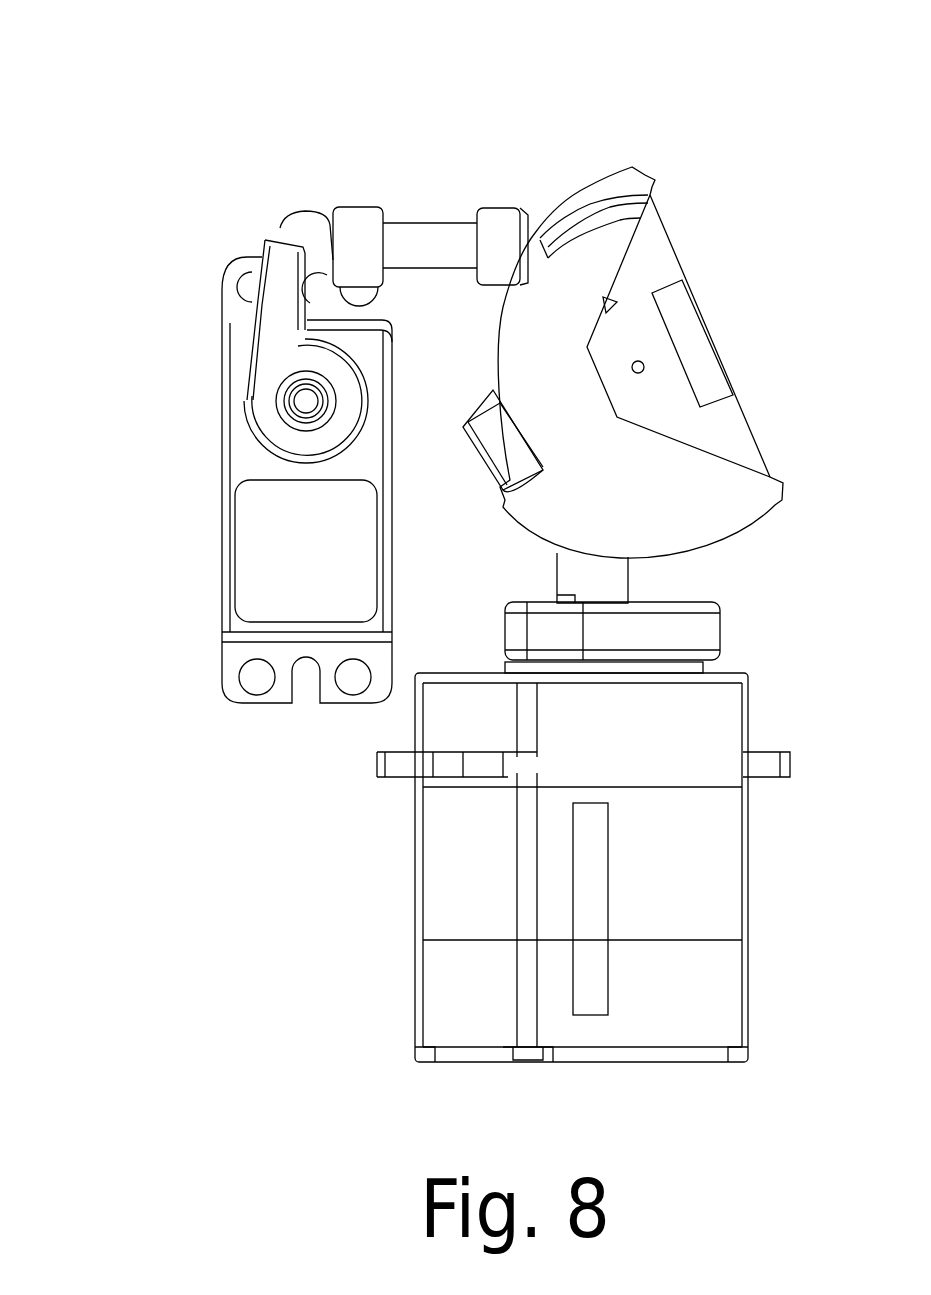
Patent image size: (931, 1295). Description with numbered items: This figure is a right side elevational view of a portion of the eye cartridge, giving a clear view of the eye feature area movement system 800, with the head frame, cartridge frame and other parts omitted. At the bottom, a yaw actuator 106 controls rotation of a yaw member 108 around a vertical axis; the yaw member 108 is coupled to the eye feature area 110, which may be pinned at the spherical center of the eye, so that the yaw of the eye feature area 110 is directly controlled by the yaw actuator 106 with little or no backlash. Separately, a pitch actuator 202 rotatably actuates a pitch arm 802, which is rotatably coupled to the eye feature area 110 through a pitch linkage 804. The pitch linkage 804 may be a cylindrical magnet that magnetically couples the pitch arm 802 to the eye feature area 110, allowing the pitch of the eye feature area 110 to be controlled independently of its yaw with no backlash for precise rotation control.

The eye feature area movement system 800 is at (143, 104).
The pitch arm 802 is at (265, 372).
The pitch linkage 804 is at (455, 261).
The pitch actuator 202 is at (337, 576).
The eye feature area 110 is at (650, 501).
The yaw member 108 is at (650, 643).
The yaw actuator 106 is at (698, 878).